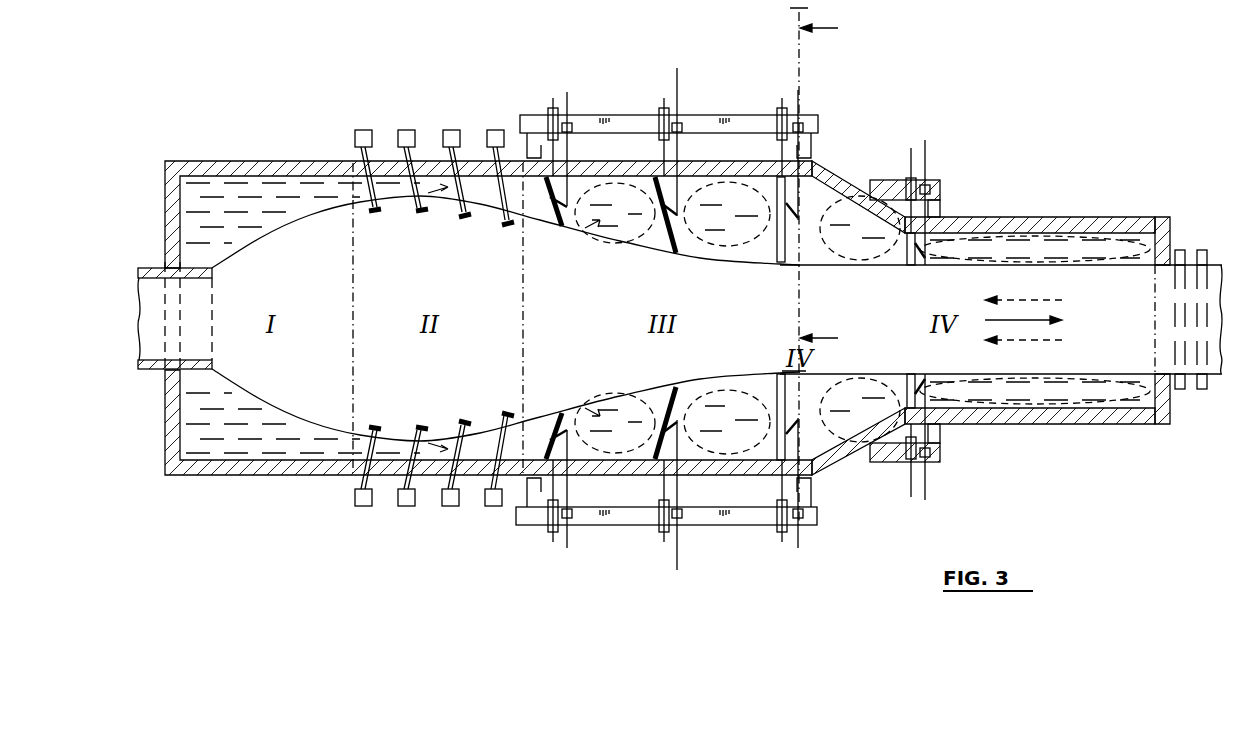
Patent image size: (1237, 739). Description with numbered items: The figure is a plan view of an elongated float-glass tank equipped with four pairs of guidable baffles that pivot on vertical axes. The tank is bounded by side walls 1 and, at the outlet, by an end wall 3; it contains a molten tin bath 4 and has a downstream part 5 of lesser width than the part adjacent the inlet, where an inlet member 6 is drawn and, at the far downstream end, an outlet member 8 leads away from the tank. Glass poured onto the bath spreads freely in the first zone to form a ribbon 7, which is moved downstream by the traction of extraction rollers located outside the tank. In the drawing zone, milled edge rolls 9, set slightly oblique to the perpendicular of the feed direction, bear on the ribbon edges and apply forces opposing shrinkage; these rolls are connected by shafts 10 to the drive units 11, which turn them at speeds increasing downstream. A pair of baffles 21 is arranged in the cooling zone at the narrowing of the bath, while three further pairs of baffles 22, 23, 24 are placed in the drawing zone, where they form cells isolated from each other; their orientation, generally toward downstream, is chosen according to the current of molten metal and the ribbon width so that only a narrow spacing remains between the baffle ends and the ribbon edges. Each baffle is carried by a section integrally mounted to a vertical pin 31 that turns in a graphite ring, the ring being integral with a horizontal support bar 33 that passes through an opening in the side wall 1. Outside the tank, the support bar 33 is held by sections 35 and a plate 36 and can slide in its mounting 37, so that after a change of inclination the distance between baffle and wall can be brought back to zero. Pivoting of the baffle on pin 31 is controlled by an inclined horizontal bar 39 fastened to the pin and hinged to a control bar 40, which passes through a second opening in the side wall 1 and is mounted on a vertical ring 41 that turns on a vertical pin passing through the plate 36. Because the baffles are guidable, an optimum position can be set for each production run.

The side walls 1 is at (272, 166).
The end wall 3 is at (1171, 240).
The molten tin bath 4 is at (1012, 424).
The downstream part 5 is at (1040, 217).
The inlet pipe 6 is at (160, 378).
The ribbon 7 is at (1100, 362).
The outlet pipe 8 is at (1203, 390).
The milled edge rolls 9 is at (420, 216).
The shafts 10 is at (496, 130).
The actuator 11 is at (406, 130).
The pair of baffles 21 is at (908, 266).
The pair of baffles 22 is at (778, 265).
The pair of baffles 23 is at (660, 252).
The pair of baffles 24 is at (556, 230).
The vertical pin 31 is at (737, 318).
The horizontal support bar 33 is at (553, 100).
The sections 35 is at (820, 150).
The plate 36 is at (722, 124).
The mounting 37 is at (549, 120).
The horizontal bar 39 is at (582, 232).
The control bar 40 is at (567, 95).
The vertical ring 41 is at (806, 128).